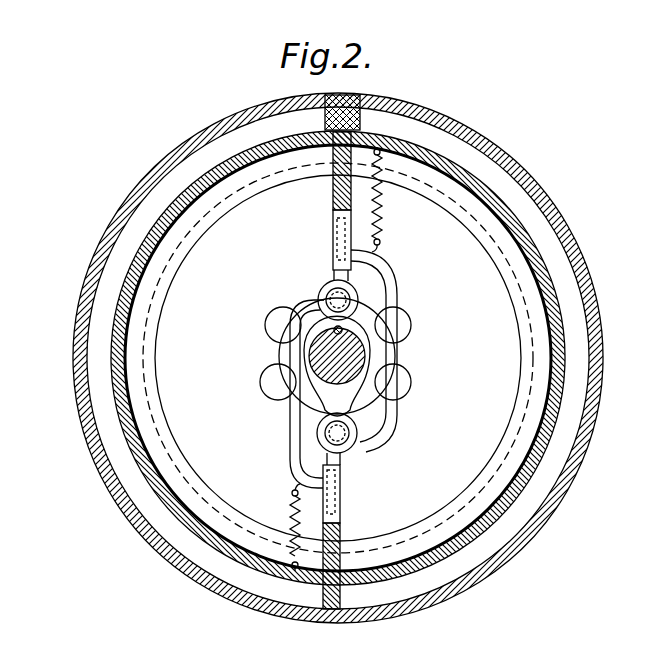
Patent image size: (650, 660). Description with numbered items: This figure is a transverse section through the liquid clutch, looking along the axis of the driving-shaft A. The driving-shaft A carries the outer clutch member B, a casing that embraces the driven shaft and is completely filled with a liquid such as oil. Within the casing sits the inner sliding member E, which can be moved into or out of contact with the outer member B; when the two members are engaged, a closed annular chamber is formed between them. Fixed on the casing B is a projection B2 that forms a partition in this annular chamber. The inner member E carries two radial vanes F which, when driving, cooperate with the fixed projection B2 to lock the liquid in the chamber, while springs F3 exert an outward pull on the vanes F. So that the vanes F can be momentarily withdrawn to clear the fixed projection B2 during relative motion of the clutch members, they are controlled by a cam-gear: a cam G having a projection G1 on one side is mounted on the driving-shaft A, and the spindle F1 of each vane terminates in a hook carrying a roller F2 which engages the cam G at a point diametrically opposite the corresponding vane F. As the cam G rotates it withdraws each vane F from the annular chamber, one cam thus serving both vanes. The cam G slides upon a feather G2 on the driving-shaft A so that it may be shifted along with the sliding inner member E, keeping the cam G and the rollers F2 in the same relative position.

The driving-shaft A is at (362, 352).
The outer clutch member B is at (82, 402).
The fixed projection B2 is at (350, 106).
The inner sliding member E is at (202, 432).
The radial vanes F is at (338, 194).
The spindle of the vane F1 is at (292, 384).
The roller F2 is at (390, 443).
The springs F3 is at (384, 228).
The cam G is at (334, 330).
The projection of the cam G1 is at (345, 401).
The feather G2 is at (334, 333).